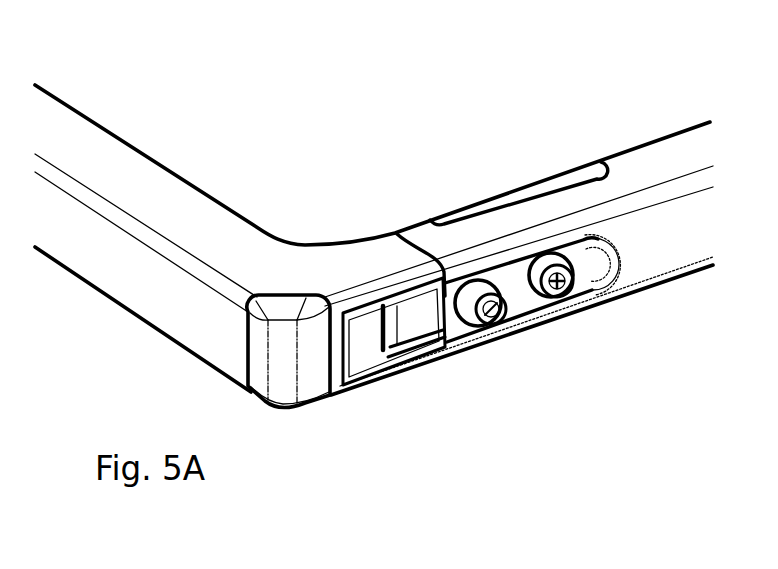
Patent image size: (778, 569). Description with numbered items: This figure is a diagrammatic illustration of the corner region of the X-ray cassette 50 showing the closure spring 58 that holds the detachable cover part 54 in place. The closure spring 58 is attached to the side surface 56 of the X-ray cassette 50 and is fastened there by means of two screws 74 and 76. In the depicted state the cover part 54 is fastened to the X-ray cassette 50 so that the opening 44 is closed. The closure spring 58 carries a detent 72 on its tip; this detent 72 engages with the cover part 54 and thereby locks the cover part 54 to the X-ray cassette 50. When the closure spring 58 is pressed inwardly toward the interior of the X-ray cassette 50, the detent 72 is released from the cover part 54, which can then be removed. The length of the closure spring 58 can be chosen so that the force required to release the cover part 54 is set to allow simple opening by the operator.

The opening 44 is at (605, 105).
The X-ray cassette 50 is at (348, 438).
The cover part 54 is at (203, 223).
The side surface 56 is at (645, 254).
The closure spring 58 is at (512, 297).
The detent 72 is at (388, 328).
The screw 74 is at (474, 281).
The screw 76 is at (548, 255).